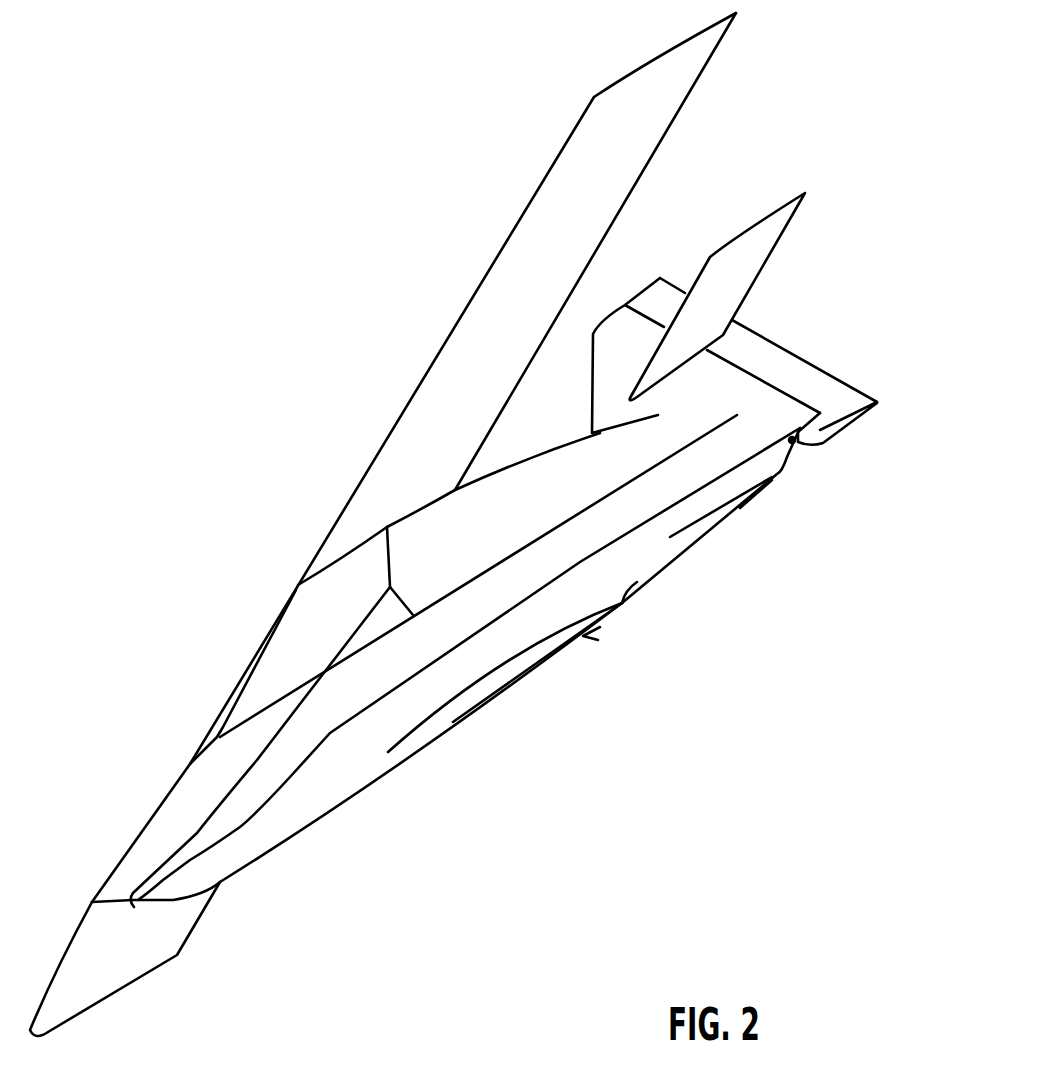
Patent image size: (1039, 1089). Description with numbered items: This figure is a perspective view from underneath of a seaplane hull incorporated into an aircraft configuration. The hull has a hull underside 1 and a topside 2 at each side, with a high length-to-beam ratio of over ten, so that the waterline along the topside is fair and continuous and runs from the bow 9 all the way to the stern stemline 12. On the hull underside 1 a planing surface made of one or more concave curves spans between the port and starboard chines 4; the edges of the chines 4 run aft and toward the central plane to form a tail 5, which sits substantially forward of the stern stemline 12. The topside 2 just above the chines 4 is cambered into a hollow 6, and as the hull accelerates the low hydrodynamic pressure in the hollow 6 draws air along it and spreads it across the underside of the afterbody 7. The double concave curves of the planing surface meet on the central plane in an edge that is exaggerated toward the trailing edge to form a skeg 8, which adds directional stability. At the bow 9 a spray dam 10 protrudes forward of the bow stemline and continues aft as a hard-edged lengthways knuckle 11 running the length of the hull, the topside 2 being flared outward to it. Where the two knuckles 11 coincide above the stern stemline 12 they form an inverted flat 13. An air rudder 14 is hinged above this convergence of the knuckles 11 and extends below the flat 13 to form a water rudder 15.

The hull underside 1 is at (480, 711).
The topside 2 is at (393, 715).
The chines 4 is at (428, 727).
The tail 5 is at (622, 603).
The hollow 6 is at (540, 640).
The afterbody 7 is at (665, 547).
The skeg 8 is at (602, 630).
The bow 9 is at (167, 903).
The spray dam 10 is at (133, 902).
The knuckle 11 is at (421, 663).
The stern stemline 12 is at (790, 462).
The inverted flat 13 is at (800, 445).
The air rudder 14 is at (752, 342).
The water rudder 15 is at (880, 405).